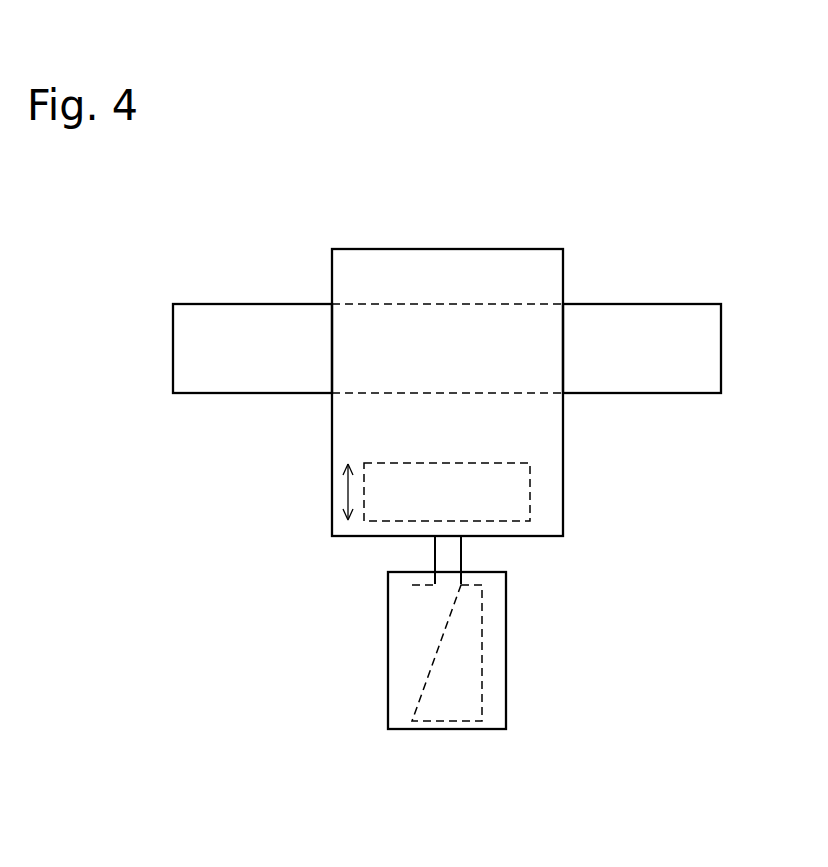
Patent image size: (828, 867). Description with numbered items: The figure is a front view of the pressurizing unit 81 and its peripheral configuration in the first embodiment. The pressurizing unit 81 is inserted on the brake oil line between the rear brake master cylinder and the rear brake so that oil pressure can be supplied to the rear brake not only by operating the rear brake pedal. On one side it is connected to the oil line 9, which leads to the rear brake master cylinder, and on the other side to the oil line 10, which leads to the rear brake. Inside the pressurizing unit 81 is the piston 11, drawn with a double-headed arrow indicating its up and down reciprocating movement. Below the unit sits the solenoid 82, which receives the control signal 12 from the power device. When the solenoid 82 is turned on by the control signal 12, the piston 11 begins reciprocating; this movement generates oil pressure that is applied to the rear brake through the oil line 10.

The pressurizing unit 81 is at (563, 212).
The oil line 10 is at (209, 303).
The oil line 9 is at (681, 303).
The piston 11 is at (538, 492).
The solenoid 82 is at (506, 660).
The control signal 12 is at (448, 729).